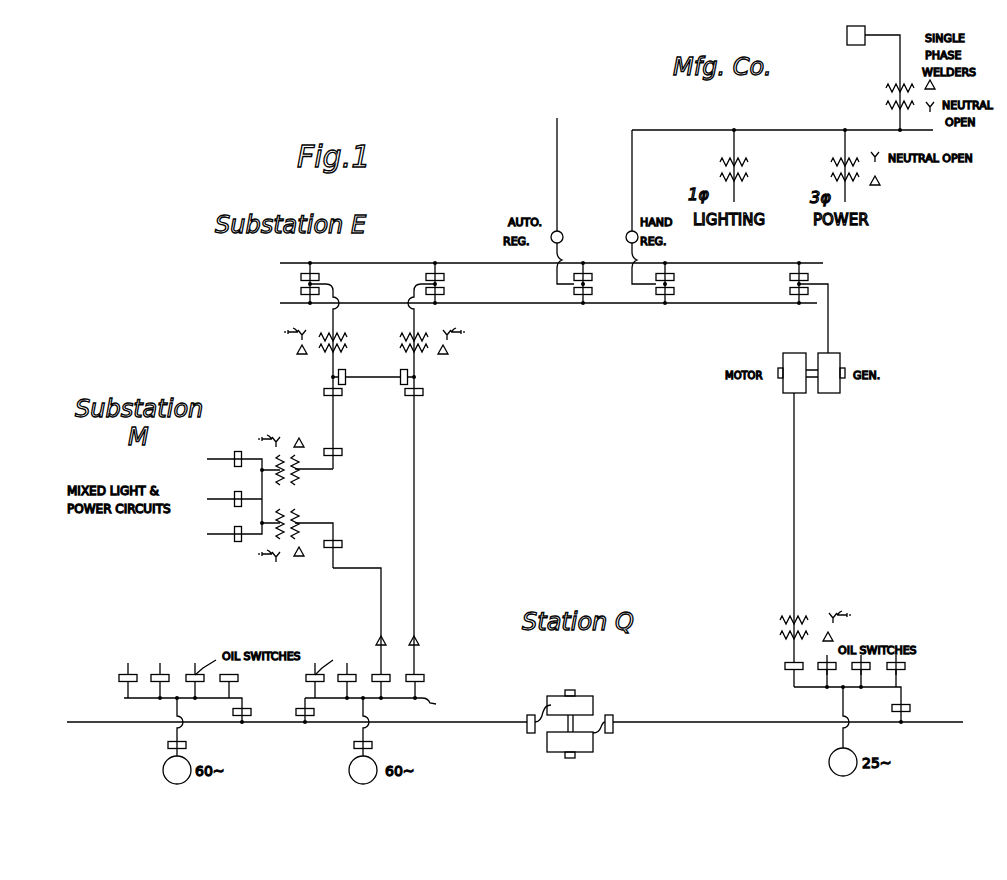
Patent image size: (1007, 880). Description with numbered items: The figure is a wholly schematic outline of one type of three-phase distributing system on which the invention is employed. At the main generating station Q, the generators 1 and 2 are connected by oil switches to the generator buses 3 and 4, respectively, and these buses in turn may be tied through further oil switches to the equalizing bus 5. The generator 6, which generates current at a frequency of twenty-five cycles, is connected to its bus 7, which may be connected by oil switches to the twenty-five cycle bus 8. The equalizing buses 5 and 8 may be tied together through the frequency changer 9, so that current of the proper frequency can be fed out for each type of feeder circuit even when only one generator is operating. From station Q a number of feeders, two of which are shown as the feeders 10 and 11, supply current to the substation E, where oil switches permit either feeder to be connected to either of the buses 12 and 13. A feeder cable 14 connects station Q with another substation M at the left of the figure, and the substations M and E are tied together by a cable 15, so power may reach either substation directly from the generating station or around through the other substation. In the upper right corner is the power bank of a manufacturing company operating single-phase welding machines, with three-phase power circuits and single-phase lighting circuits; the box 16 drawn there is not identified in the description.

The generator 1 is at (161, 771).
The generator 2 is at (351, 740).
The generator bus 3 is at (126, 699).
The generator bus 4 is at (370, 692).
The equalizing bus 5 is at (472, 716).
The generator 6 is at (826, 763).
The bus 7 is at (797, 688).
The 25 cycle bus 8 is at (670, 723).
The frequency changer 9 is at (578, 695).
The feeder 10 is at (414, 467).
The feeder 11 is at (794, 521).
The bus 12 is at (478, 263).
The bus 13 is at (512, 305).
The feeder cable 14 is at (380, 607).
The cable 15 is at (333, 417).
The single phase welder load 16 is at (853, 50).